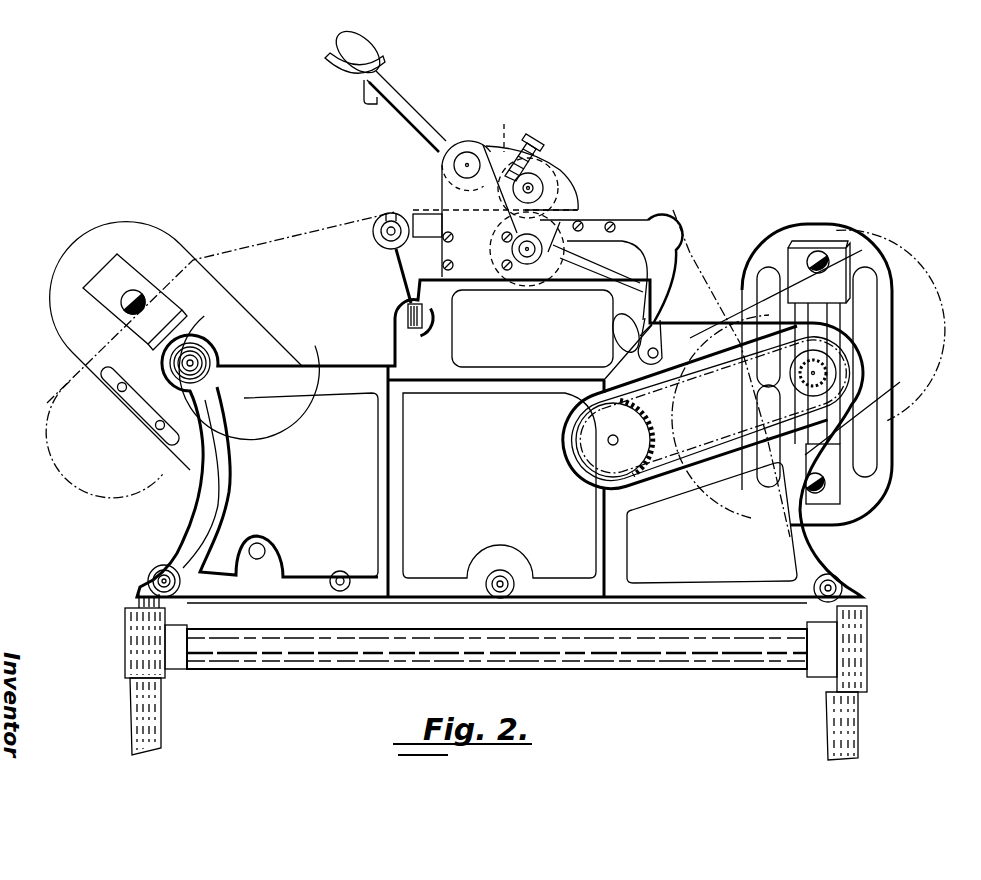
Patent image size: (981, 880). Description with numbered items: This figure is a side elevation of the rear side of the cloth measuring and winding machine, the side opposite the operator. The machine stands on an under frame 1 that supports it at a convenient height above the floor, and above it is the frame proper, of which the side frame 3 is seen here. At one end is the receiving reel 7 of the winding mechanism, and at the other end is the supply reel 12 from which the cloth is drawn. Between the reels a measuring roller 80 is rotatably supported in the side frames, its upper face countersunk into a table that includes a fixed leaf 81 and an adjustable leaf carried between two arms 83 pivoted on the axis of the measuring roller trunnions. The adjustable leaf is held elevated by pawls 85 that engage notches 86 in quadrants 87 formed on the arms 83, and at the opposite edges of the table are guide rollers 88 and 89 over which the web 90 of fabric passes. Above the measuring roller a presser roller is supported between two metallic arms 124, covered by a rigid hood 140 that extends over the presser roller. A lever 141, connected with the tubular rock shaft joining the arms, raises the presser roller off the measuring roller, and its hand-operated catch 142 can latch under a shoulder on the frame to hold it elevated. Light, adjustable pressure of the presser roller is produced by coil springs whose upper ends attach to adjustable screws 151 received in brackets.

The under frame 1 is at (741, 669).
The side frame 3 is at (388, 498).
The receiving reel 7 is at (862, 233).
The supply reel 12 is at (141, 216).
The measuring roller 80 is at (552, 273).
The fixed leaf 81 is at (431, 213).
The arms 83 is at (593, 228).
The pawls 85 is at (643, 347).
The notches 86 is at (628, 316).
The quadrants 87 is at (663, 235).
The guide roller 88 is at (384, 236).
The guide roller 89 is at (634, 249).
The web 90 is at (351, 220).
The metallic arm 124 is at (495, 124).
The rigid hood 140 is at (553, 163).
The lever 141 is at (413, 100).
The hand-operated catch 142 is at (357, 73).
The adjustable screws 151 is at (534, 140).